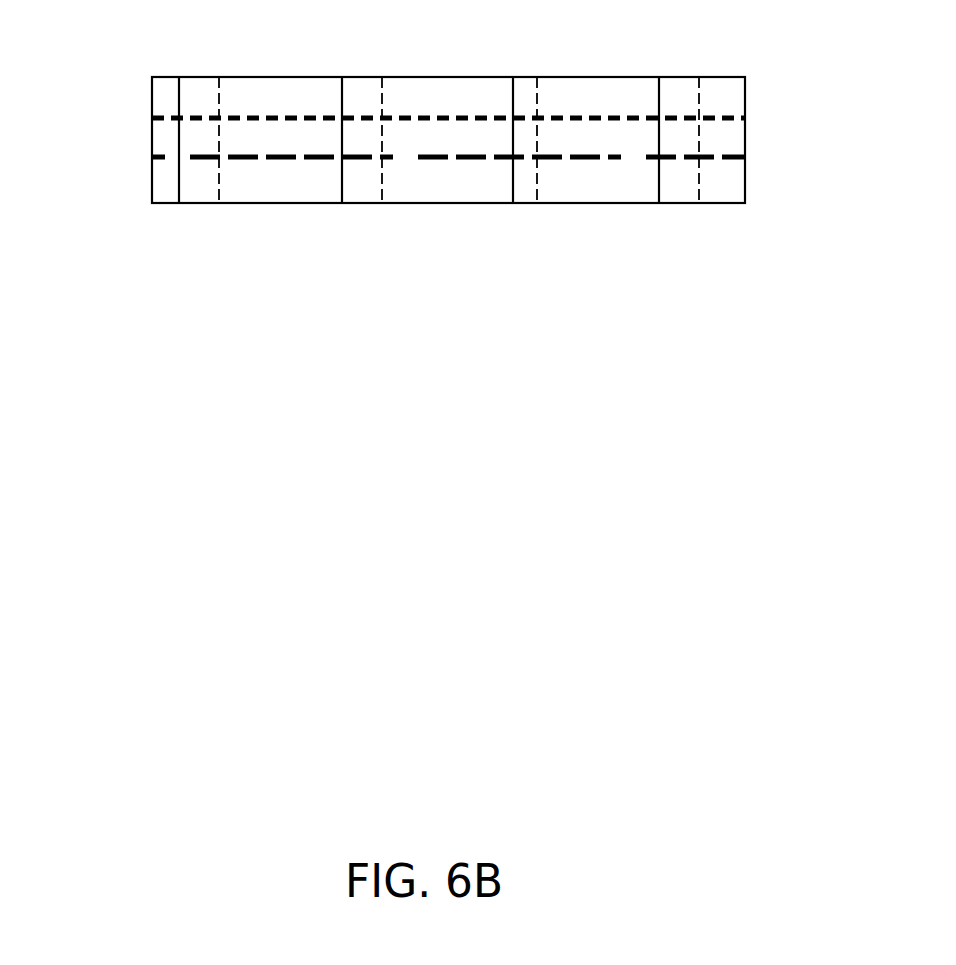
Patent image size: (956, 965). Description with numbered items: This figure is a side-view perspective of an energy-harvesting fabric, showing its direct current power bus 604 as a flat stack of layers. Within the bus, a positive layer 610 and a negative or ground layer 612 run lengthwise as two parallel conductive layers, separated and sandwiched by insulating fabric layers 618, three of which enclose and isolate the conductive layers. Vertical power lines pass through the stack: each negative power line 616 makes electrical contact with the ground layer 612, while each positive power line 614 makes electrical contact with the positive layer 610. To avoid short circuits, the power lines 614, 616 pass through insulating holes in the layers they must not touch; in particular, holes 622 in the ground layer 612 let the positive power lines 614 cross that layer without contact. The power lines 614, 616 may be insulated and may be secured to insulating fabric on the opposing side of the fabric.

The direct current power bus 604 is at (395, 840).
The positive layer 610 is at (746, 157).
The ground layer 612 is at (746, 118).
The positive power line 614 is at (537, 77).
The negative power line 616 is at (341, 78).
The insulating fabric layer 618 is at (160, 92).
The holes 622 is at (523, 163).